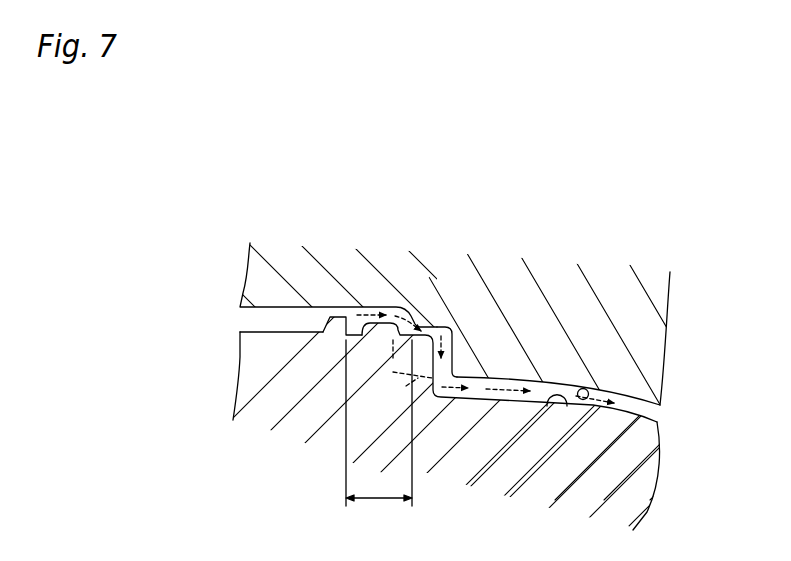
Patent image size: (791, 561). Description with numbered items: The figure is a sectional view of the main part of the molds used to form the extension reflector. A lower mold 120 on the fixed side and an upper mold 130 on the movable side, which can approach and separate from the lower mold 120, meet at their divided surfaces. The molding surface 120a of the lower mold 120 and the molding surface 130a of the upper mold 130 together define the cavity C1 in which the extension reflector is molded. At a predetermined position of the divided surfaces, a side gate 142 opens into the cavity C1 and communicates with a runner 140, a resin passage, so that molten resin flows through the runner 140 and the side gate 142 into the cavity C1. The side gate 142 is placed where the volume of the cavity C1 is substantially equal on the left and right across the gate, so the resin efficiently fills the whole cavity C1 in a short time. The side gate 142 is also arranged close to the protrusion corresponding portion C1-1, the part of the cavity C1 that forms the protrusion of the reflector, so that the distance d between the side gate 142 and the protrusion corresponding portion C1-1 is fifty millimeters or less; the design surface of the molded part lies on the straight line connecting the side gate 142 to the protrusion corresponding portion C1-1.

The lower mold 120 is at (494, 475).
The molding surface of the lower mold 120a is at (553, 405).
The upper mold 130 is at (588, 325).
The molding surface of the upper mold 130a is at (593, 384).
The runner 140 is at (283, 316).
The side gate 142 is at (343, 310).
The cavity C1 is at (509, 371).
The protrusion corresponding portion C1-1 is at (437, 325).
The distance d is at (379, 423).